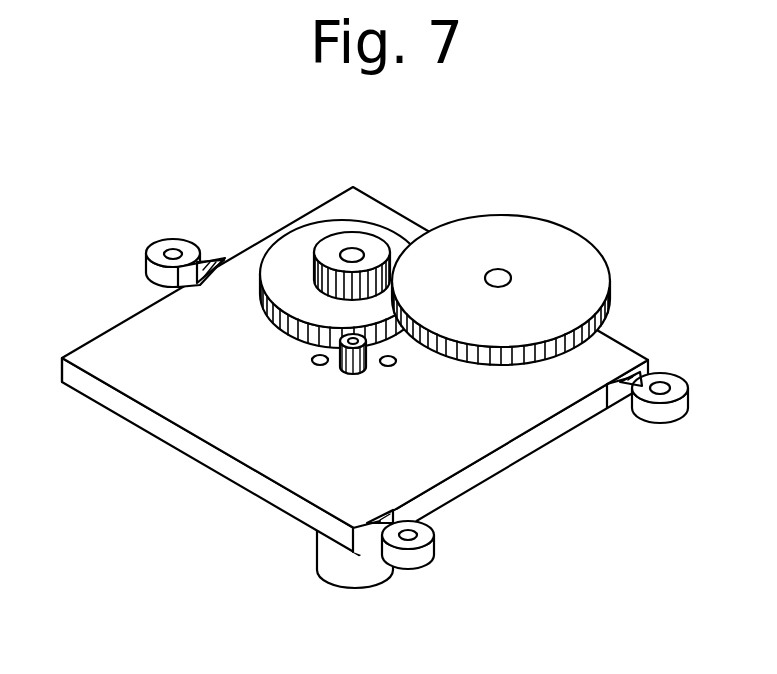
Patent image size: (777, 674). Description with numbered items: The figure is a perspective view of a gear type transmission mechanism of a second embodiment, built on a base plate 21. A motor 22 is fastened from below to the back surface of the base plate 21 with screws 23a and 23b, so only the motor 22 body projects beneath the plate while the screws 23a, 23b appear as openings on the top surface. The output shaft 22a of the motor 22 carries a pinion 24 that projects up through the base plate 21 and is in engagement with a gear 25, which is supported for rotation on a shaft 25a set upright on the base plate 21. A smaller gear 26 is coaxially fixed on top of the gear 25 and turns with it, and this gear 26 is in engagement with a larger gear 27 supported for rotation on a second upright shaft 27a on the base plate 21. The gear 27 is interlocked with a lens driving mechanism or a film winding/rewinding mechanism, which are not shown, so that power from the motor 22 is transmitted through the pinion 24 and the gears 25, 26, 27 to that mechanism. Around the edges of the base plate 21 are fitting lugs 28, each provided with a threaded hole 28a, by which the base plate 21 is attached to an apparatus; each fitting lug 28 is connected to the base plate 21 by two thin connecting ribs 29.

The base plate 21 is at (200, 396).
The motor 22 is at (312, 572).
The output shaft 22a is at (70, 381).
The screw 23a is at (320, 365).
The screw 23b is at (392, 366).
The pinion 24 is at (345, 365).
The gear 25 is at (288, 262).
The shaft 25a is at (352, 256).
The gear 26 is at (382, 253).
The gear 27 is at (505, 233).
The shaft 27a is at (500, 275).
The fitting lug 28 is at (150, 250).
The threaded hole 28a is at (172, 252).
The connecting rib 29 is at (210, 250).